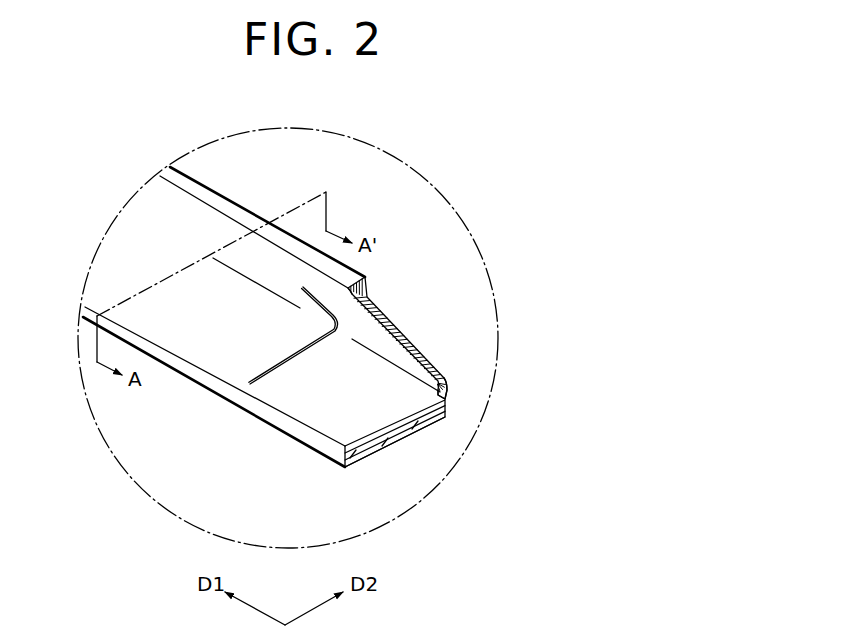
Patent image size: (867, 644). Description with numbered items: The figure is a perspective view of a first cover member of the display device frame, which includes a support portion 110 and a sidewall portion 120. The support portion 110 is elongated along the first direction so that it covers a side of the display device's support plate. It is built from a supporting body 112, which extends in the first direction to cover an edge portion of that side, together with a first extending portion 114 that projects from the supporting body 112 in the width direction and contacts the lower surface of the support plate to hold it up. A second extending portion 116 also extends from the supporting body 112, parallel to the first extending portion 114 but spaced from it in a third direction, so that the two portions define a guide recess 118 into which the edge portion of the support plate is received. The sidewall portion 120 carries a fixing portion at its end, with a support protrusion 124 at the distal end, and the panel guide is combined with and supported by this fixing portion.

The support portion 110 is at (538, 527).
The supporting body 112 is at (360, 453).
The first extending portion 114 is at (385, 442).
The second extending portion 116 is at (415, 425).
The guide recess 118 is at (456, 398).
The sidewall portion 120 is at (413, 337).
The support protrusion 124 is at (170, 170).